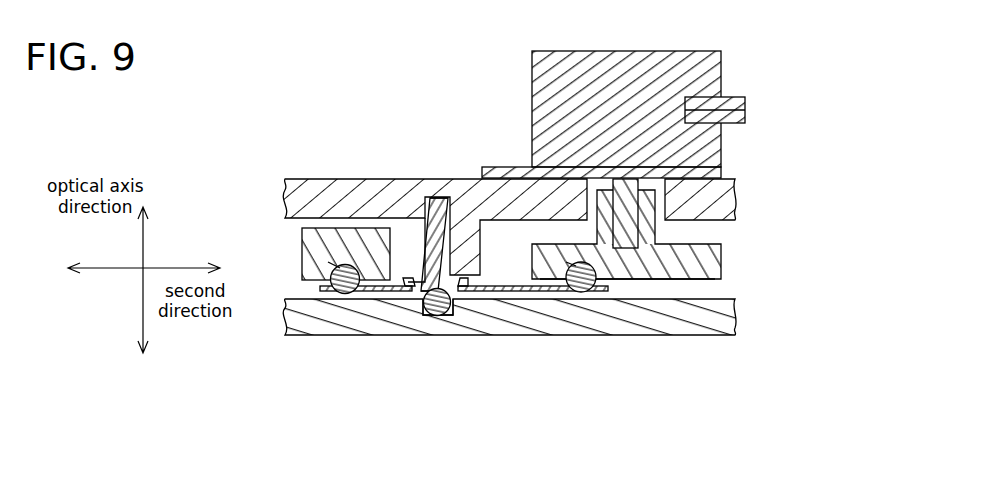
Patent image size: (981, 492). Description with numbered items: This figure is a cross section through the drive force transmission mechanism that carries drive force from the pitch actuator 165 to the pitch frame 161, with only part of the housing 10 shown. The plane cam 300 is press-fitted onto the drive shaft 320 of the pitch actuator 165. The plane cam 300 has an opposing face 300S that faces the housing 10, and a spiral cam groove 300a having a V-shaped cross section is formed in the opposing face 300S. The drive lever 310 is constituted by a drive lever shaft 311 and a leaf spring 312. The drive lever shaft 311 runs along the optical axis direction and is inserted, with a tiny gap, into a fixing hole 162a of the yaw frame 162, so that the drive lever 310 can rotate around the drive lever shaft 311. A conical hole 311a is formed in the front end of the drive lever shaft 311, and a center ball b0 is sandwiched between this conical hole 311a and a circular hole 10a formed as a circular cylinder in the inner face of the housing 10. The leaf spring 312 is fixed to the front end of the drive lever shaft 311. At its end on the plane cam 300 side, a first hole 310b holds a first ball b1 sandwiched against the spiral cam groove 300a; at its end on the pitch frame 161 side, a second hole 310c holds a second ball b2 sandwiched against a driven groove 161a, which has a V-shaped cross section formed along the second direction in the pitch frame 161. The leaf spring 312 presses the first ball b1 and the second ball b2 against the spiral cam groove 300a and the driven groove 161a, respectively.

The housing 10 is at (736, 327).
The circular hole 10a is at (450, 311).
The pitch frame 161 is at (302, 265).
The driven groove 161a is at (331, 265).
The yaw frame 162 is at (312, 178).
The fixing hole 162a is at (445, 190).
The pitch actuator 165 is at (722, 74).
The plane cam 300 is at (721, 262).
The spiral cam groove 300a is at (572, 259).
The opposing face 300S is at (689, 280).
The drive lever 310 is at (454, 235).
The first hole 310b is at (592, 292).
The second hole 310c is at (352, 291).
The drive lever shaft 311 is at (447, 247).
The conical hole 311a is at (433, 289).
The leaf spring 312 is at (428, 205).
The drive shaft 320 is at (725, 210).
The center ball b0 is at (437, 317).
The first ball b1 is at (581, 293).
The second ball b2 is at (345, 295).